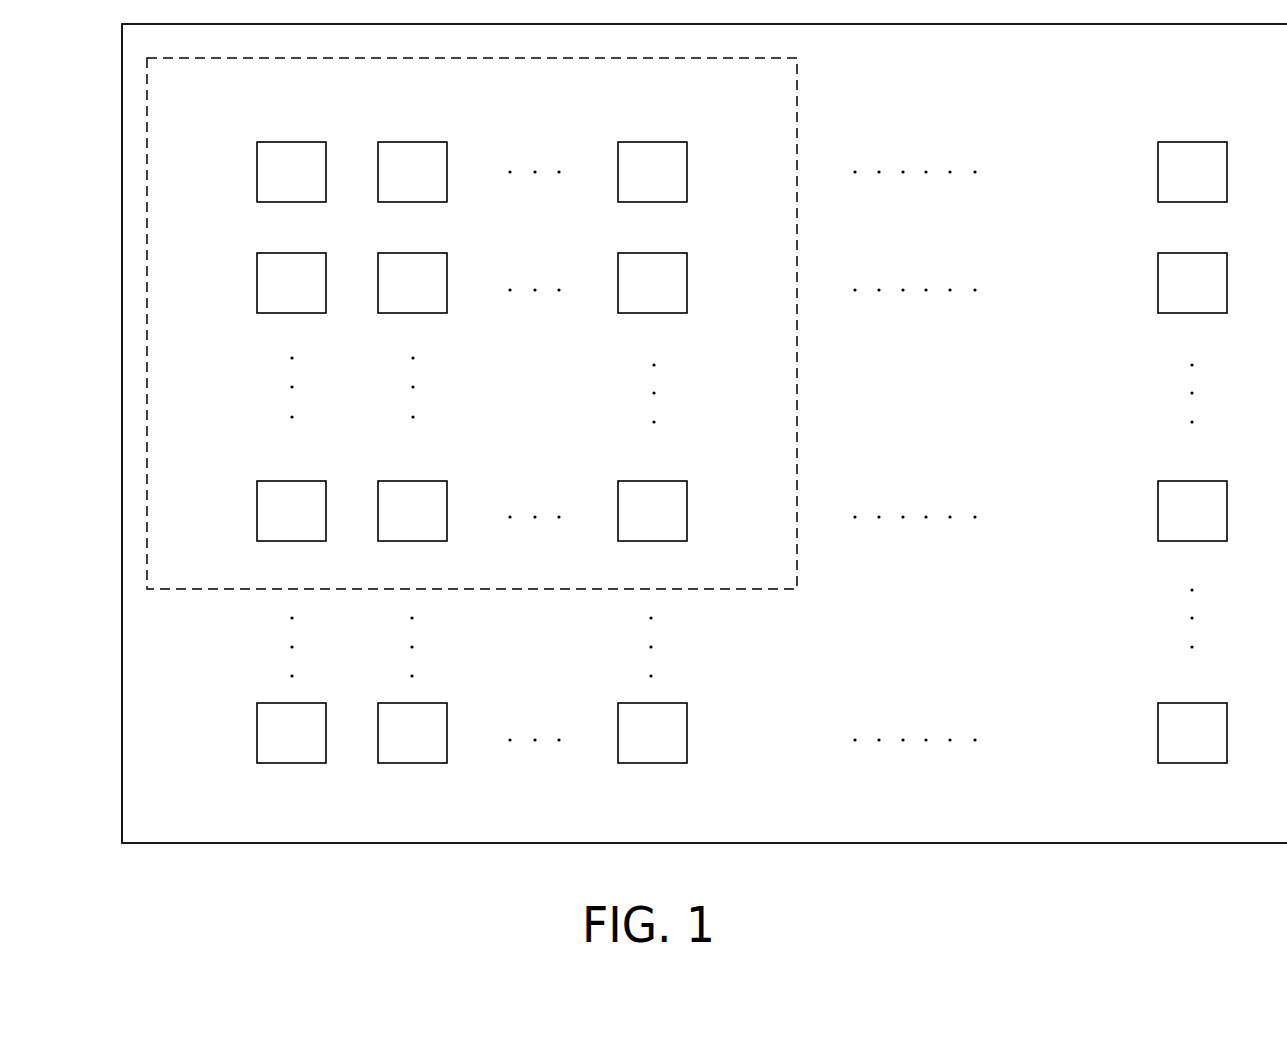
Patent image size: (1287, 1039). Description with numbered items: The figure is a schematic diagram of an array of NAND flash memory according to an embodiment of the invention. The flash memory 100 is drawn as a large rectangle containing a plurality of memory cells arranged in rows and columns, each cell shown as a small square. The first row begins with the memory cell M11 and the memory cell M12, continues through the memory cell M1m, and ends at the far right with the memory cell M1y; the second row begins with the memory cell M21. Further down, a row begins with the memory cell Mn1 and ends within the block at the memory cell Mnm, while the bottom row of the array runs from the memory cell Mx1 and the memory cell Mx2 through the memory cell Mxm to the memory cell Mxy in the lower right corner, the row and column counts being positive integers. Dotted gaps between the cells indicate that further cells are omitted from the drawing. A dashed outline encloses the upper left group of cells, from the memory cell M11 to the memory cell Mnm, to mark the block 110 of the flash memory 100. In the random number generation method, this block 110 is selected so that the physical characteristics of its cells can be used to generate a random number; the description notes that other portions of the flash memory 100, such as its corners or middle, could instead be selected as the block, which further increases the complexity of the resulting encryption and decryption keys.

The flash memory 100 is at (122, 79).
The block 110 is at (147, 183).
The memory cell M11 is at (288, 142).
The memory cell M12 is at (411, 142).
The memory cell M1m is at (653, 142).
The memory cell M1y is at (1193, 142).
The memory cell M21 is at (257, 280).
The memory cell Mn1 is at (257, 508).
The memory cell Mnm is at (686, 541).
The memory cell Mx1 is at (292, 763).
The memory cell Mx2 is at (414, 763).
The memory cell Mxm is at (655, 763).
The memory cell Mxy is at (1195, 763).